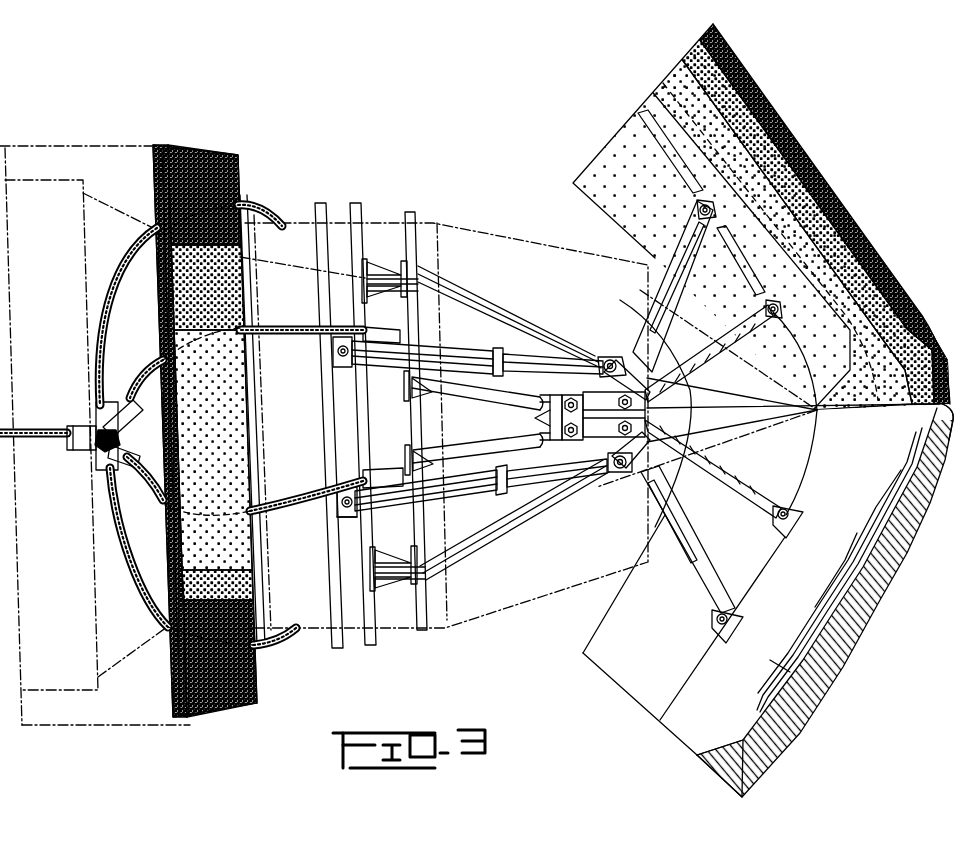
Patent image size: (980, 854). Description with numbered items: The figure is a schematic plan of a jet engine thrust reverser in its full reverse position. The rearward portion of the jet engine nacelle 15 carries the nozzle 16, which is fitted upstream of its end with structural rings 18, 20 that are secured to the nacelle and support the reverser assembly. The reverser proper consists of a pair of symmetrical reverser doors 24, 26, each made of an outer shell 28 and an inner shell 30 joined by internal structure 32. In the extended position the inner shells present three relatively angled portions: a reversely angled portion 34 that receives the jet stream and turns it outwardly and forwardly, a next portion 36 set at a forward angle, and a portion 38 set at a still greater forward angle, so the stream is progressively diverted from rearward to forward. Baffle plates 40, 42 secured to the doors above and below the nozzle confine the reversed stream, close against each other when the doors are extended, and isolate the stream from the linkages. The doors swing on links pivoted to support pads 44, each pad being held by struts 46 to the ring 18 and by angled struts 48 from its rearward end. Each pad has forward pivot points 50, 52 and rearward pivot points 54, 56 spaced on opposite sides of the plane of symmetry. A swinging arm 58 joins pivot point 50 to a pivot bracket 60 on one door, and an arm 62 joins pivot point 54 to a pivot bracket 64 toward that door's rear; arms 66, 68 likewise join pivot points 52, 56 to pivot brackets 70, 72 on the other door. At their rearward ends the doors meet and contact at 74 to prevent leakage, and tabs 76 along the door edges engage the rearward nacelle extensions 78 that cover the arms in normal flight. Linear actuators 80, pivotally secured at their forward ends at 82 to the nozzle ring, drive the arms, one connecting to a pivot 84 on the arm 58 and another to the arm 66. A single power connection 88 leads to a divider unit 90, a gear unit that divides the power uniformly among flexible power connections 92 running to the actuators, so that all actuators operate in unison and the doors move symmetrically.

The jet engine nacelle 15 is at (118, 722).
The nozzle 16 is at (620, 574).
The structural ring 18 is at (410, 206).
The structural ring 20 is at (324, 202).
The reverser door 24 is at (823, 168).
The reverser door 26 is at (863, 613).
The outer shell 28 is at (917, 517).
The inner shell 30 is at (905, 475).
The internal structure 32 is at (927, 474).
The reversely angled portion 34 is at (880, 520).
The forwardly angled portion 36 is at (765, 660).
The forwardly angled portion 38 is at (716, 742).
The baffle plate 40 is at (761, 217).
The baffle plate 42 is at (684, 635).
The support pad 44 is at (525, 418).
The strut 46 is at (457, 394).
The strut 48 is at (496, 307).
The forward pivot point 50 is at (567, 443).
The forward pivot point 52 is at (558, 391).
The rearward pivot point 54 is at (627, 478).
The rearward pivot point 56 is at (628, 350).
The swinging arm 58 is at (698, 588).
The pivot bracket 60 is at (737, 612).
The arm 62 is at (697, 457).
The pivot bracket 64 is at (782, 537).
The arm 66 is at (685, 255).
The arm 68 is at (707, 341).
The pivot bracket 70 is at (697, 210).
The pivot bracket 72 is at (767, 309).
The door contact point 74 is at (852, 410).
The tab 76 is at (649, 137).
The nacelle rearward extension 78 is at (290, 265).
The linear actuator 80 is at (478, 351).
The actuator pivot 82 is at (340, 519).
The pivot 84 is at (611, 360).
The power connection 88 is at (48, 436).
The divider unit 90 is at (90, 407).
The flexible power connection 92 is at (115, 323).